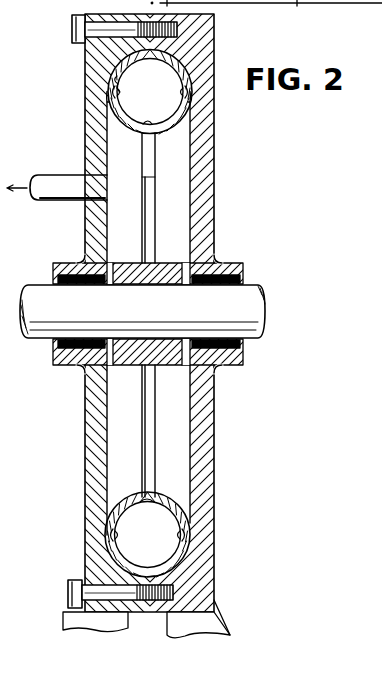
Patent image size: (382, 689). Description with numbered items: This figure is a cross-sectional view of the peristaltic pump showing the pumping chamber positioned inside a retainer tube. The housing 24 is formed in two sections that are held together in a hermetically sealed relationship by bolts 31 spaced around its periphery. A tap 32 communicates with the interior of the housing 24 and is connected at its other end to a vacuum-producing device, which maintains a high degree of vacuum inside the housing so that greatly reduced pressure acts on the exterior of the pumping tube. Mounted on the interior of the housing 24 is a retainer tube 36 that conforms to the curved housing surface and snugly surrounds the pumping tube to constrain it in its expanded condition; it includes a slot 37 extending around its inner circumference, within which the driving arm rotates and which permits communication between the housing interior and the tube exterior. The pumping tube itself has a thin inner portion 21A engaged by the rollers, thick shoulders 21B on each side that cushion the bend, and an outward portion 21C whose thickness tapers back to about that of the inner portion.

The housing 24 is at (212, 207).
The bolts 31 is at (72, 25).
The tap 32 is at (74, 175).
The retainer tube 36 is at (168, 130).
The slot 37 is at (143, 138).
The inner portion of the tube cross section 21A is at (145, 125).
The shoulders 21B is at (112, 104).
The outward portion of the tube cross section 21C is at (150, 63).